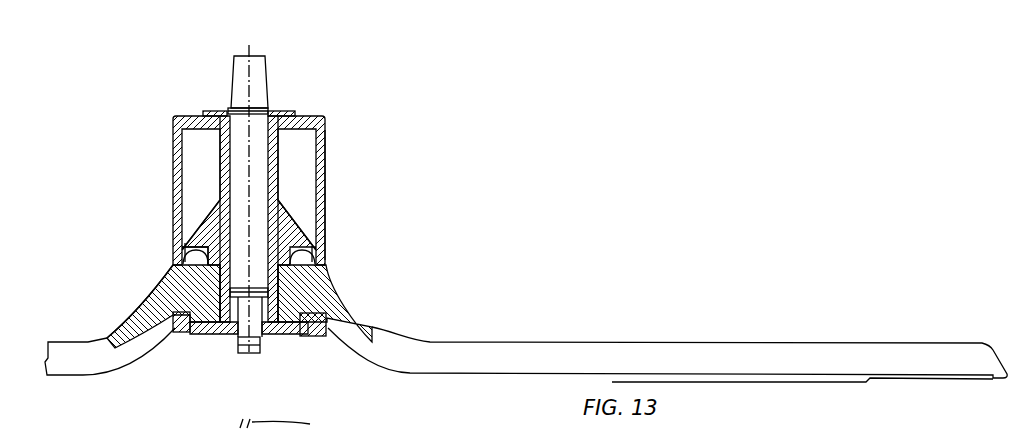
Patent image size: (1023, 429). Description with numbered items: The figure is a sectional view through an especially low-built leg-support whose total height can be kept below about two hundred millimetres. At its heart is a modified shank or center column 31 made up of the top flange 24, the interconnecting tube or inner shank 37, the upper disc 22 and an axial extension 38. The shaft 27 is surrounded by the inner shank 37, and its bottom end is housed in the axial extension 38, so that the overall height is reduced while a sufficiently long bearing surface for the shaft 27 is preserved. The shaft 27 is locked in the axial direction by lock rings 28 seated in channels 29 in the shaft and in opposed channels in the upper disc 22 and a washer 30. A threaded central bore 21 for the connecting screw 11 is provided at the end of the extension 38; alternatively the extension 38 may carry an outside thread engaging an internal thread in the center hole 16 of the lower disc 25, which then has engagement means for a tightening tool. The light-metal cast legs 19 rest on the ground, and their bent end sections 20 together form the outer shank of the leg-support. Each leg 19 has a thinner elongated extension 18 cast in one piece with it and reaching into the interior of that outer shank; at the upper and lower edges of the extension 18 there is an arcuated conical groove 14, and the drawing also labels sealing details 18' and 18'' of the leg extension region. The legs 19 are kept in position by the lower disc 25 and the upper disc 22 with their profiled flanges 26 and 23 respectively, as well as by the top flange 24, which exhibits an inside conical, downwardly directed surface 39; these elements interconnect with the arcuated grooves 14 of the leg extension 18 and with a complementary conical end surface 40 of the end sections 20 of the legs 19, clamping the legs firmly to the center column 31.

The connecting screw 11 is at (223, 326).
The arcuated conical groove 14 is at (183, 248).
The center hole 16 is at (252, 308).
The extension 18 is at (142, 301).
The sealing ring 18' is at (256, 265).
The clamping flange lip 18'' is at (343, 303).
The legs 19 is at (73, 347).
The end sections 20 is at (326, 172).
The threaded central bore 21 is at (247, 307).
The upper disc 22 is at (202, 228).
The conical flange 23 is at (183, 246).
The top flange 24 is at (178, 120).
The lower disc 25 is at (290, 334).
The profiled flange 26 is at (185, 322).
The shaft 27 is at (265, 66).
The lock rings 28 is at (232, 112).
The channels 29 is at (253, 108).
The washer 30 is at (292, 112).
The center column 31 is at (212, 153).
The inner shank 37 is at (222, 177).
The axial extension 38 is at (165, 284).
The conical surface 39 is at (324, 134).
The conical end surface 40 is at (324, 130).